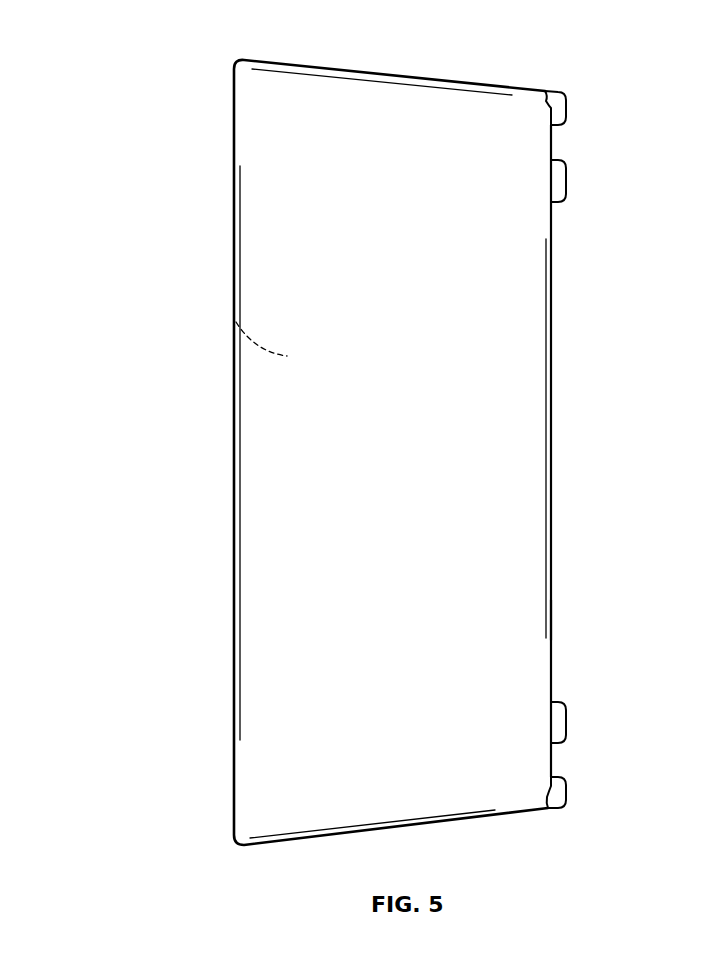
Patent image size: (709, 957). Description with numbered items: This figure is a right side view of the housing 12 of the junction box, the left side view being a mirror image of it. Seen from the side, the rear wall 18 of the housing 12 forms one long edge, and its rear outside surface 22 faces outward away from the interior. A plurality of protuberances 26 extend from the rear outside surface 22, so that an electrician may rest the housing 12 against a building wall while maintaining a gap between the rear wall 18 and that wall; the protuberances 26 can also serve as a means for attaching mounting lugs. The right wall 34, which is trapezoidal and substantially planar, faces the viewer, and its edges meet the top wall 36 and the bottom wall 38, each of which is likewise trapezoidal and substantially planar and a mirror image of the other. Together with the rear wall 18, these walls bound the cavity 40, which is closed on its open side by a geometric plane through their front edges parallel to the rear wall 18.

The housing 12 is at (150, 93).
The rear wall 18 is at (553, 617).
The rear outside surface 22 is at (552, 443).
The protuberances 26 is at (559, 111).
The right wall 34 is at (250, 640).
The top wall 36 is at (384, 73).
The bottom wall 38 is at (405, 828).
The cavity 40 is at (233, 318).